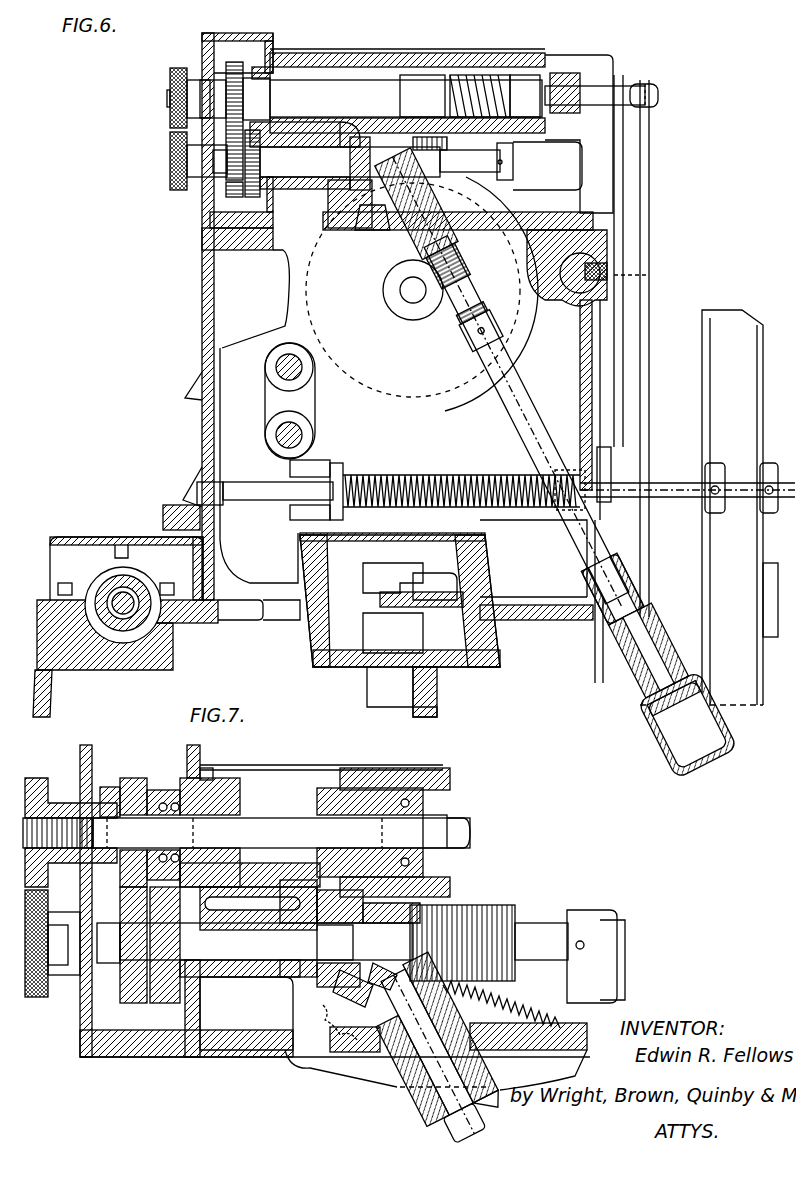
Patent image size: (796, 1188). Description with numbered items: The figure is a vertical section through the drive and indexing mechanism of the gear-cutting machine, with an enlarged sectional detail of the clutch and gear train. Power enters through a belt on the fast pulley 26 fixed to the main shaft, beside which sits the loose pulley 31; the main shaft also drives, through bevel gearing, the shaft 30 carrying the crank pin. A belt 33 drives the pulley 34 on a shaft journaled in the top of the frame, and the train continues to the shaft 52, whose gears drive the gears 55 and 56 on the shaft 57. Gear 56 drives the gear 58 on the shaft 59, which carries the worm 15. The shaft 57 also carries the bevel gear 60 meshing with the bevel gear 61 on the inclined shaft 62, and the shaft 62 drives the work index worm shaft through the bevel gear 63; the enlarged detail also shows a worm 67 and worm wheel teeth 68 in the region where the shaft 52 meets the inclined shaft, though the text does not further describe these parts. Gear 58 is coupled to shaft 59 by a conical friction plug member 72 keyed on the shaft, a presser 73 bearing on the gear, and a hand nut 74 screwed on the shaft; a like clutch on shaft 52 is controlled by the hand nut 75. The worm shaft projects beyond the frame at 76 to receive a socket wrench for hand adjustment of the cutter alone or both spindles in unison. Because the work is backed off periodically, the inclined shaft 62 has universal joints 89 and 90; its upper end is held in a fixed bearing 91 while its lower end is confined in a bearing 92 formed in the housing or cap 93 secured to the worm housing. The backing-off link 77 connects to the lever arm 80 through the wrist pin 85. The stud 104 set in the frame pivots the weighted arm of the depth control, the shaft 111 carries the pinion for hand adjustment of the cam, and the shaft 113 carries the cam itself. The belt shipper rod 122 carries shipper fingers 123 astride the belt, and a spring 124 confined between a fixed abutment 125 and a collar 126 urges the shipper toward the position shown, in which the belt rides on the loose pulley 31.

In FIG. 6, the worm 15 is at (482, 72).
In FIG. 6, the pulley 26 is at (677, 495).
In FIG. 6, the shaft 30 is at (145, 581).
In FIG. 6, the loose pulley 31 is at (770, 705).
In FIG. 6, the belt 33 is at (638, 365).
In FIG. 6, the pulley 34 is at (650, 250).
In FIG. 6, the shaft 52 is at (479, 170).
In FIG. 7, the shaft 52 is at (535, 927).
In FIG. 6, the gear 55 is at (248, 251).
In FIG. 7, the gear 55 is at (162, 1002).
In FIG. 6, the gear 56 is at (226, 194).
In FIG. 7, the gear 56 is at (128, 1002).
In FIG. 6, the shaft 57 is at (353, 163).
In FIG. 7, the shaft 57 is at (266, 941).
In FIG. 6, the gear 58 is at (230, 119).
In FIG. 7, the gear 58 is at (138, 785).
In FIG. 6, the shaft 59 is at (318, 97).
In FIG. 7, the shaft 59 is at (272, 826).
In FIG. 6, the bevel gear 60 is at (333, 195).
In FIG. 7, the bevel gear 60 is at (292, 985).
In FIG. 6, the bevel gear 61 is at (356, 233).
In FIG. 7, the bevel gear 61 is at (338, 1002).
In FIG. 6, the inclined shaft 62 is at (520, 440).
In FIG. 7, the inclined shaft 62 is at (434, 1051).
In FIG. 6, the bevel gear 63 is at (676, 707).
In FIG. 7, the worm 67 is at (478, 906).
In FIG. 7, the worm wheel teeth 68 is at (495, 1005).
In FIG. 7, the conical friction plug member 72 is at (133, 819).
In FIG. 7, the presser 73 is at (112, 790).
In FIG. 6, the nut or hand wheel 74 is at (172, 70).
In FIG. 7, the nut or hand wheel 74 is at (40, 777).
In FIG. 6, the hand nut 75 is at (170, 180).
In FIG. 7, the hand nut 75 is at (40, 998).
In FIG. 6, the projecting end of worm shaft 76 is at (660, 91).
In FIG. 6, the link 77 is at (425, 595).
In FIG. 6, the lever arm 80 is at (362, 668).
In FIG. 6, the wrist pin 85 is at (373, 605).
In FIG. 6, the universal joint 89 is at (470, 306).
In FIG. 6, the universal joint 90 is at (632, 600).
In FIG. 6, the fixed bearing 91 is at (388, 266).
In FIG. 7, the fixed bearing 91 is at (422, 1089).
In FIG. 6, the bearing 92 is at (642, 682).
In FIG. 6, the housing or cap 93 is at (655, 742).
In FIG. 6, the stud 104 is at (566, 310).
In FIG. 6, the shaft 111 is at (265, 367).
In FIG. 6, the shaft 113 is at (265, 436).
In FIG. 6, the shipper rod 122 is at (252, 482).
In FIG. 6, the belt shipper fingers 123 is at (766, 468).
In FIG. 6, the spring 124 is at (432, 474).
In FIG. 6, the fixed abutment 125 is at (344, 466).
In FIG. 6, the collar 126 is at (578, 470).